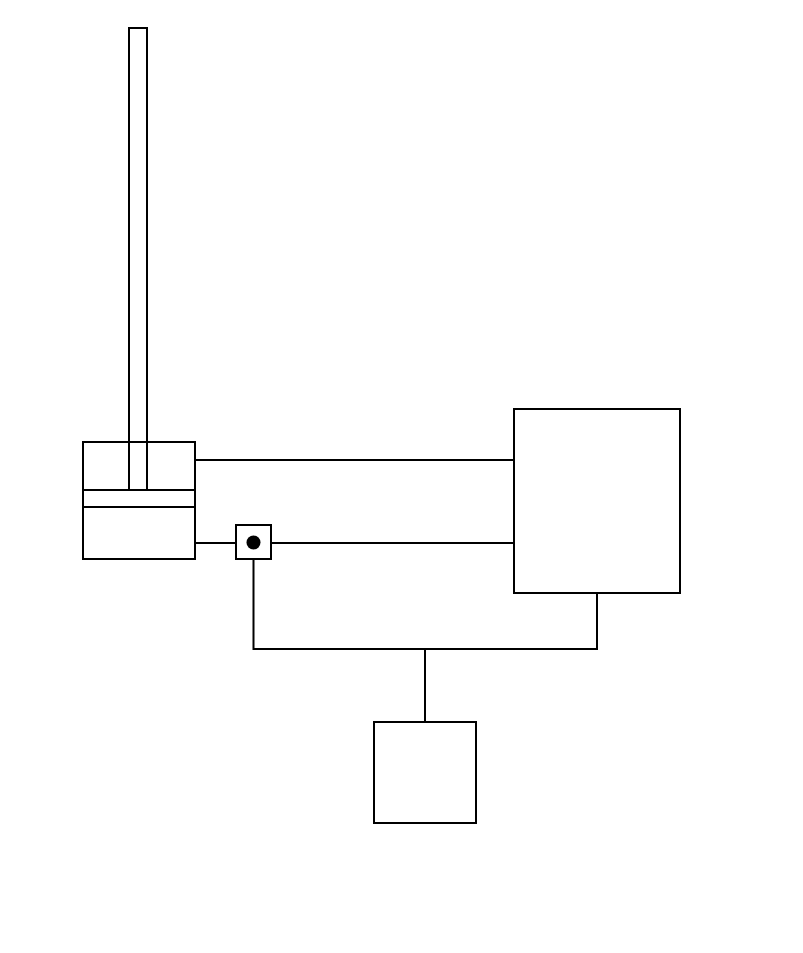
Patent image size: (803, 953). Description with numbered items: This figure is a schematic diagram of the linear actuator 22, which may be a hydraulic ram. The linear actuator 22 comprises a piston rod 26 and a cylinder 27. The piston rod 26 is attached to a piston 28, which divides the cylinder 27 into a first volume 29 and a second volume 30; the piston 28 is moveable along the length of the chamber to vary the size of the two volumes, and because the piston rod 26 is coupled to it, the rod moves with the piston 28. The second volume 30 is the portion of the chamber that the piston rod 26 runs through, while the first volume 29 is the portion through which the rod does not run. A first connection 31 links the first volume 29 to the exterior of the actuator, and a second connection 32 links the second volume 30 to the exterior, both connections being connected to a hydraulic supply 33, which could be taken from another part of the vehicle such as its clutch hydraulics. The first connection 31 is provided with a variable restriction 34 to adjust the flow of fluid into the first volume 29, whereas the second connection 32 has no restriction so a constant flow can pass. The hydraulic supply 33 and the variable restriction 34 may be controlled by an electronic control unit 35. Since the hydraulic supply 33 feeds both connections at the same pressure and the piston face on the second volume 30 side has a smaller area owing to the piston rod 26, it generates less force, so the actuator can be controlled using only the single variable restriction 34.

The linear actuator 22 is at (90, 295).
The piston rod 26 is at (147, 118).
The cylinder 27 is at (95, 559).
The piston 28 is at (92, 497).
The first volume 29 is at (145, 552).
The second volume 30 is at (92, 452).
The first connection 31 is at (195, 548).
The second connection 32 is at (195, 452).
The hydraulic supply 33 is at (680, 425).
The variable restriction 34 is at (253, 525).
The electronic control unit 35 is at (476, 738).